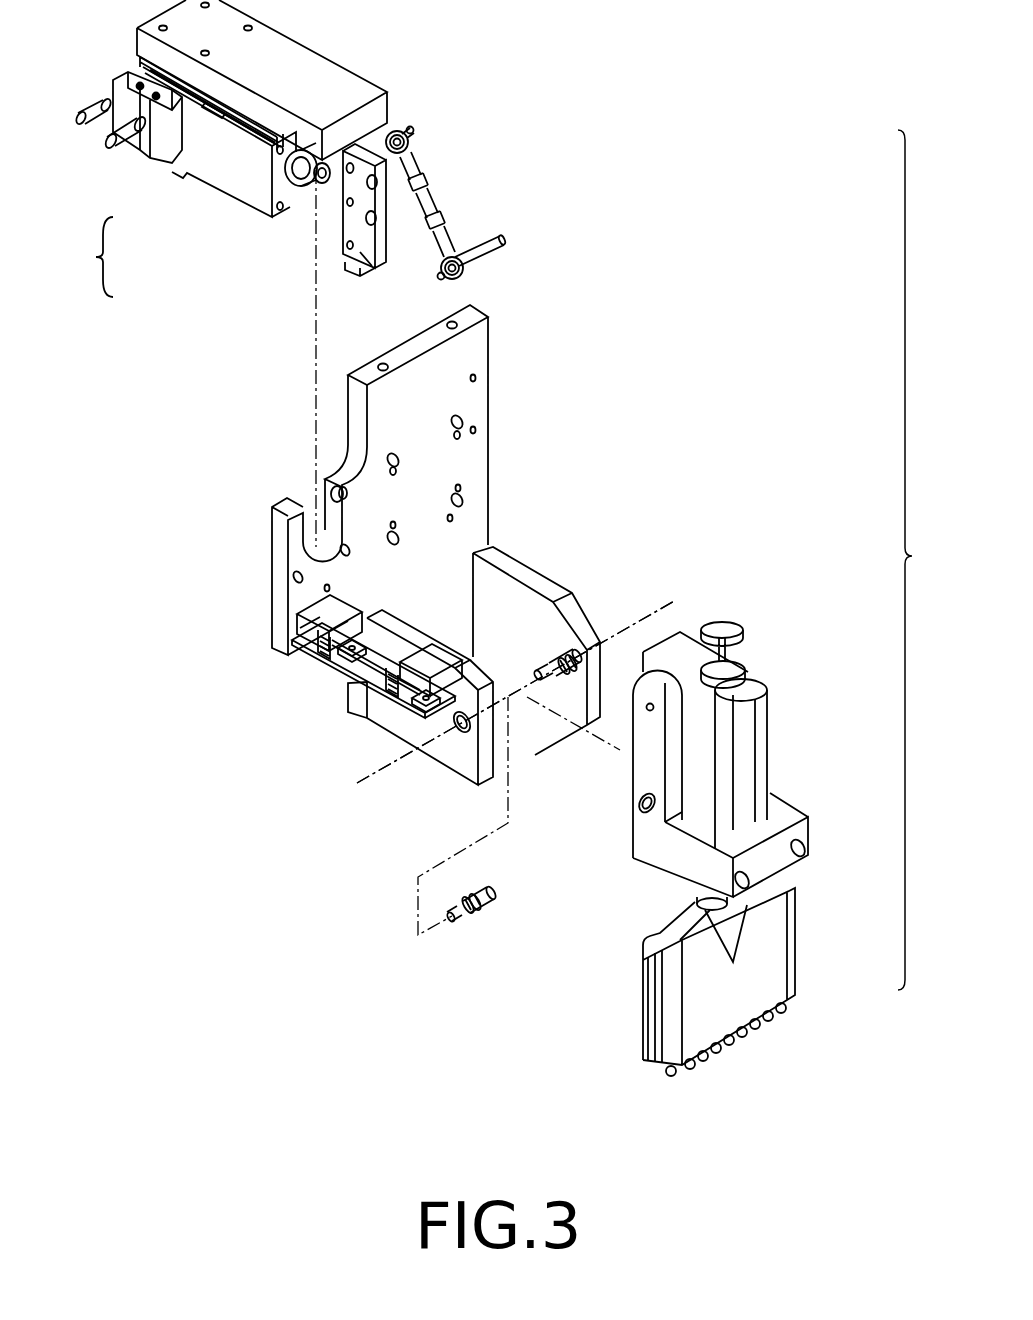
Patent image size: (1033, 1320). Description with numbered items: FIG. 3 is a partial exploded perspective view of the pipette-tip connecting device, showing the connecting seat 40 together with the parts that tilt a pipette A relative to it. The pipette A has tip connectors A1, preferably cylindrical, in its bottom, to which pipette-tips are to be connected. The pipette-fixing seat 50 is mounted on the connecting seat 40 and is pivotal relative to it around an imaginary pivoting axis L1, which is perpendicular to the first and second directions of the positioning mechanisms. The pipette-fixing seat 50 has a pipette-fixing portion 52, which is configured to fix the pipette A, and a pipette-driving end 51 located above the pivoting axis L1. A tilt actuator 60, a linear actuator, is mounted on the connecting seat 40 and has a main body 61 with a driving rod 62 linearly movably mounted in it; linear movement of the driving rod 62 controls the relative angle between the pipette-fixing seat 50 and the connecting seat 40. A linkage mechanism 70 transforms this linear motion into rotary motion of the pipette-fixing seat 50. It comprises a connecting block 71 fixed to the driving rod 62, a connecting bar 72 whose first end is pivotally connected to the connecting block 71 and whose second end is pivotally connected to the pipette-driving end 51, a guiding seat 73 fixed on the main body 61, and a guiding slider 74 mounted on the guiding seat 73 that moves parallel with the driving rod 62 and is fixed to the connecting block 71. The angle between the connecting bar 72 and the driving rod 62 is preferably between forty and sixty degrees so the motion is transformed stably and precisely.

The linkage mechanism 70 is at (460, 127).
The guiding slider 74 is at (332, 73).
The guiding seat 73 is at (235, 118).
The main body 61 is at (222, 175).
The driving rod 62 is at (314, 184).
The tilt actuator 60 is at (85, 257).
The connecting block 71 is at (364, 250).
The connecting bar 72 is at (432, 200).
The connecting seat 40 is at (507, 442).
The pivoting axis L1 is at (372, 775).
The pipette-fixing seat 50 is at (711, 767).
The pipette-driving end 51 is at (624, 688).
The pipette-fixing portion 52 is at (782, 863).
The pipette A is at (750, 982).
The tip connectors A1 is at (770, 1022).